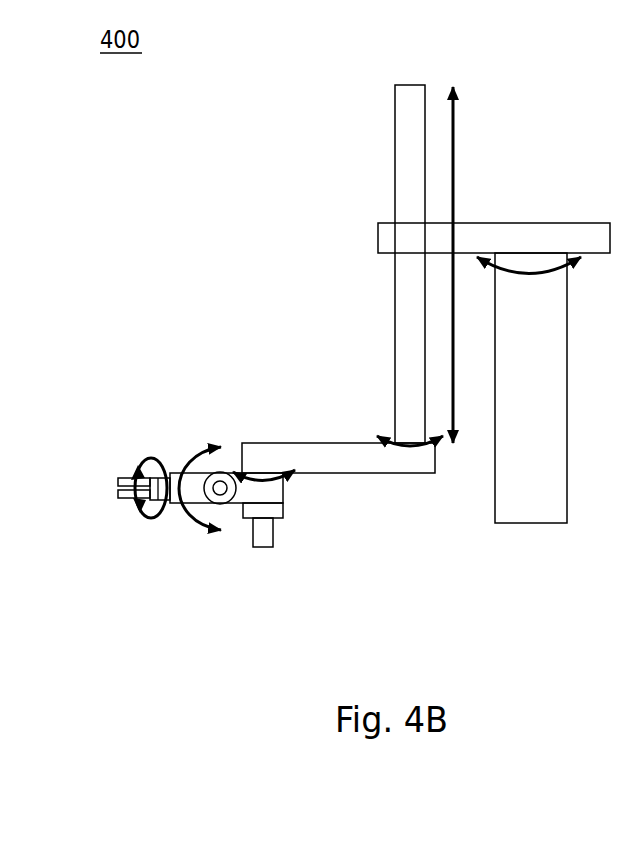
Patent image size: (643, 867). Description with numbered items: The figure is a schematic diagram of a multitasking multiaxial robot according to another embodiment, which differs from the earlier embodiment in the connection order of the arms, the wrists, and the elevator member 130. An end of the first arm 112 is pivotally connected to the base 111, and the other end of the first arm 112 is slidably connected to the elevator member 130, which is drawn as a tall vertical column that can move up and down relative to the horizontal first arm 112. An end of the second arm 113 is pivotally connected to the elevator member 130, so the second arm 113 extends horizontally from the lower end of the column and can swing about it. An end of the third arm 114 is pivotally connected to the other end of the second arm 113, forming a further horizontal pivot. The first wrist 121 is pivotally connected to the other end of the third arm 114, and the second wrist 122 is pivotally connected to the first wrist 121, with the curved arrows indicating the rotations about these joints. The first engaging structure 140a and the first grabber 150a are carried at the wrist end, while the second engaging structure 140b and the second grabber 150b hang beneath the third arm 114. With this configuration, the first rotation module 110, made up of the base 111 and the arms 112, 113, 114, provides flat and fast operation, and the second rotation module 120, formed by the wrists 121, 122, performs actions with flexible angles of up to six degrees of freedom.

The first rotation module 110 is at (493, 604).
The base 111 is at (510, 487).
The first arm 112 is at (468, 240).
The second arm 113 is at (360, 462).
The third arm 114 is at (267, 493).
The second rotation module 120 is at (215, 380).
The first wrist 121 is at (177, 480).
The second wrist 122 is at (172, 478).
The elevator member 130 is at (408, 165).
The first engaging structure 140a is at (160, 500).
The second engaging structure 140b is at (255, 510).
The first grabber 150a is at (133, 500).
The second grabber 150b is at (265, 533).